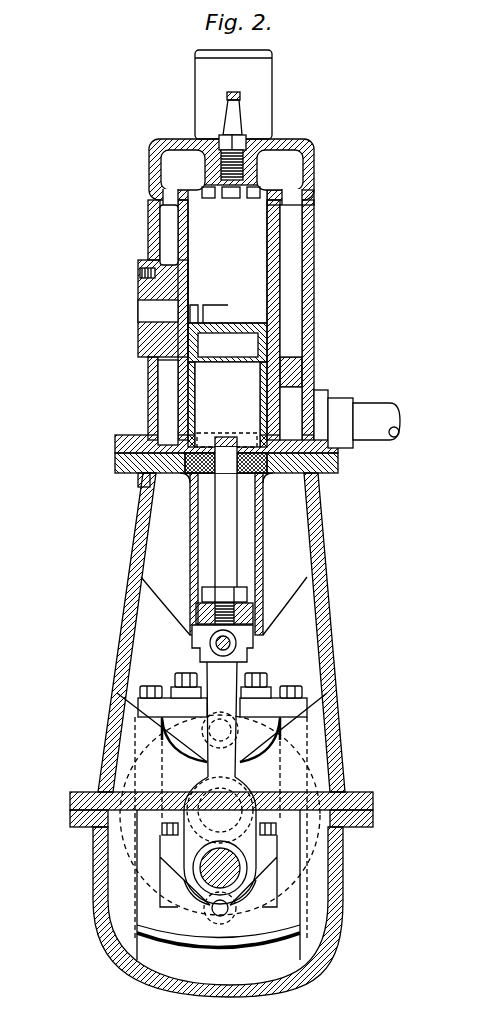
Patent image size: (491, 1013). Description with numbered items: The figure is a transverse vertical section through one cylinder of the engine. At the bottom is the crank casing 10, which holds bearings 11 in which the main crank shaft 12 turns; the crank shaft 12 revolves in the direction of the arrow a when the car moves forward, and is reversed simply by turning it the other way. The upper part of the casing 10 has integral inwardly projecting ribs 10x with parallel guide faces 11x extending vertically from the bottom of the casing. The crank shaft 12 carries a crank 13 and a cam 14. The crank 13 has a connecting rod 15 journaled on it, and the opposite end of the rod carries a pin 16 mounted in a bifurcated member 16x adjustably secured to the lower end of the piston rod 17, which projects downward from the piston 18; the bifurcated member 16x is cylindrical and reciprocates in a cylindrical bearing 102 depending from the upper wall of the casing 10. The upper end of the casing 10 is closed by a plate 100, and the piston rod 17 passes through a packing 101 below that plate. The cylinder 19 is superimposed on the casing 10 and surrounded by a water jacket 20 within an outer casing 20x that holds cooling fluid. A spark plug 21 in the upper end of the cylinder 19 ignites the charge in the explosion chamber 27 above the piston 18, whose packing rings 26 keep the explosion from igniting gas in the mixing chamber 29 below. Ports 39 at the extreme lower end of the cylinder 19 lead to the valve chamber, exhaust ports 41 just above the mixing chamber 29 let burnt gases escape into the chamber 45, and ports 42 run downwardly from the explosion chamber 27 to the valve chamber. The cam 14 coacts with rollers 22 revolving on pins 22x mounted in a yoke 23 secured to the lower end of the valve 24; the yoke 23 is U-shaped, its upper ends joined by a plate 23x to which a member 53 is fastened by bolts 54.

The crank casing 10 is at (322, 594).
The inwardly projecting ribs 10x is at (353, 871).
The bearings 11 is at (229, 840).
The parallel guide faces 11x is at (137, 948).
The main crank shaft 12 is at (343, 764).
The crank 13 is at (190, 878).
The cam 14 is at (98, 764).
The connecting rod 15 is at (228, 680).
The pin 16 is at (212, 644).
The bifurcated member 16x is at (255, 600).
The piston rod 17 is at (228, 535).
The piston 18 is at (272, 371).
The cylinder 19 is at (268, 252).
The water jacket 20 is at (293, 289).
The outer casing 20x is at (314, 321).
The spark plug 21 is at (240, 112).
The rollers 22 is at (245, 926).
The pins 22x is at (221, 734).
The yoke 23 is at (205, 947).
The plate 23x is at (290, 713).
The valve 24 is at (256, 657).
The packing rings 26 is at (180, 362).
The explosion chamber 27 is at (200, 241).
The mixing chamber 29 is at (165, 412).
The ports 39 is at (250, 436).
The exhaust ports 41 is at (200, 306).
The ports 42 is at (245, 200).
The chamber 45 is at (150, 309).
The member 53 is at (177, 690).
The bolts 54 is at (268, 690).
The plates 100 is at (180, 458).
The packing 101 is at (195, 493).
The cylindrical bearing 102 is at (192, 566).
The arrow a is at (182, 766).